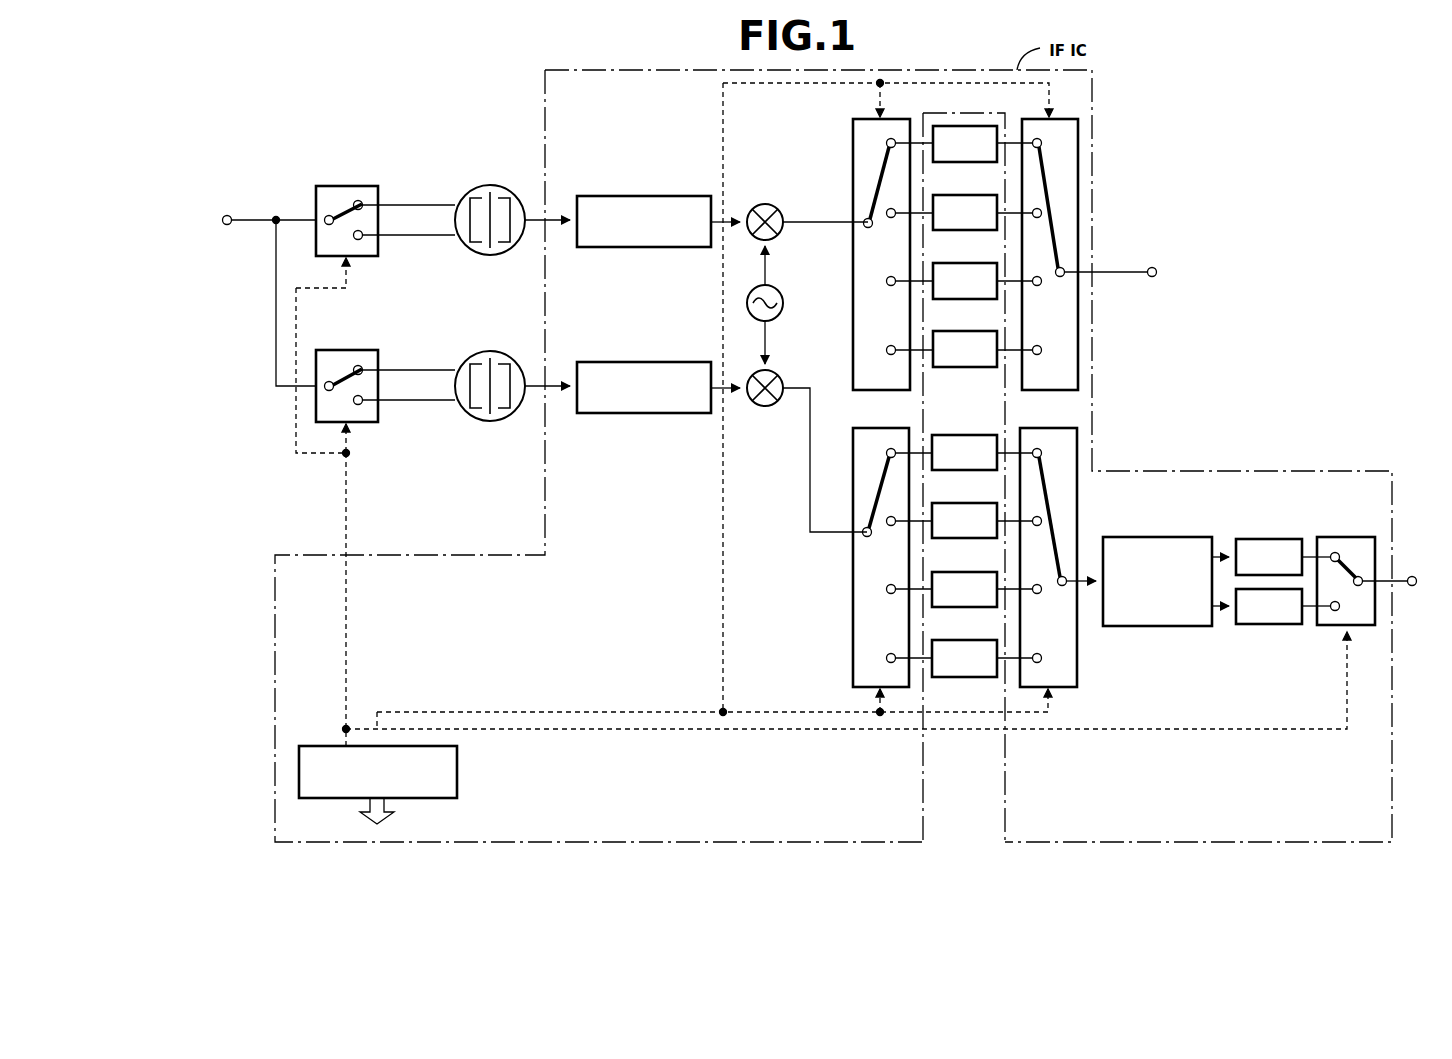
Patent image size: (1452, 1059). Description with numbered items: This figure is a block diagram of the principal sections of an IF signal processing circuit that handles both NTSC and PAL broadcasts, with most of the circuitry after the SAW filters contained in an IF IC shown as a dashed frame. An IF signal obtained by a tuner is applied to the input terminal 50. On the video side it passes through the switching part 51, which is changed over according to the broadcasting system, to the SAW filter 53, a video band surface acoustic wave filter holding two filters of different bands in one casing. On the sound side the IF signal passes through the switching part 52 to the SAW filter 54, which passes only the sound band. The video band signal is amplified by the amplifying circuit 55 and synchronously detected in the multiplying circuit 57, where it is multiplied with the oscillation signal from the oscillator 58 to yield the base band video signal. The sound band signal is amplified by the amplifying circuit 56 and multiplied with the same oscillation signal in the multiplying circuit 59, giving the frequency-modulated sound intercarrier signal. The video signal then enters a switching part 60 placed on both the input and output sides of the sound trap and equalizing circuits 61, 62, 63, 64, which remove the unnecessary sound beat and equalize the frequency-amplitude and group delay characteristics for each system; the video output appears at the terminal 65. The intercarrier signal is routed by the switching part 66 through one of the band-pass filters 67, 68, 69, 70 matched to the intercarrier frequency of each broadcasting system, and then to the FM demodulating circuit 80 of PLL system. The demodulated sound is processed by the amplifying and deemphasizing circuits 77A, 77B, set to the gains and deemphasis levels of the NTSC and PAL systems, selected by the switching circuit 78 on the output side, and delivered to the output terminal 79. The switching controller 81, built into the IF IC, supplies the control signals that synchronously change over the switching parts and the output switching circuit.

The input terminal 50 is at (228, 212).
The switching part 51 is at (348, 184).
The switching part 52 is at (378, 422).
The SAW filter 53 is at (491, 184).
The SAW filter 54 is at (491, 351).
The amplifying circuit 55 is at (643, 194).
The amplifying circuit 56 is at (643, 360).
The multiplying circuit 57 is at (778, 212).
The oscillator 58 is at (779, 292).
The multiplying circuit 59 is at (778, 378).
The switching part 60 is at (1062, 119).
The sound trap circuit and equalizing circuit 61 is at (980, 164).
The sound trap circuit and equalizing circuit 62 is at (980, 232).
The sound trap circuit and equalizing circuit 63 is at (980, 300).
The sound trap circuit and equalizing circuit 64 is at (980, 368).
The terminal 65 is at (1154, 265).
The switching part 66 is at (1062, 428).
The band-pass filter 67 is at (980, 473).
The band-pass filter 68 is at (980, 541).
The band-pass filter 69 is at (980, 609).
The band-pass filter 70 is at (980, 678).
The amplifying circuit and deemphasizing circuit 77A is at (1272, 535).
The amplifying circuit and deemphasizing circuit 77B is at (1270, 624).
The switching circuit 78 is at (1349, 535).
The output terminal 79 is at (1414, 573).
The FM demodulating circuit of PLL system 80 is at (1152, 535).
The switching controller 81 is at (457, 770).